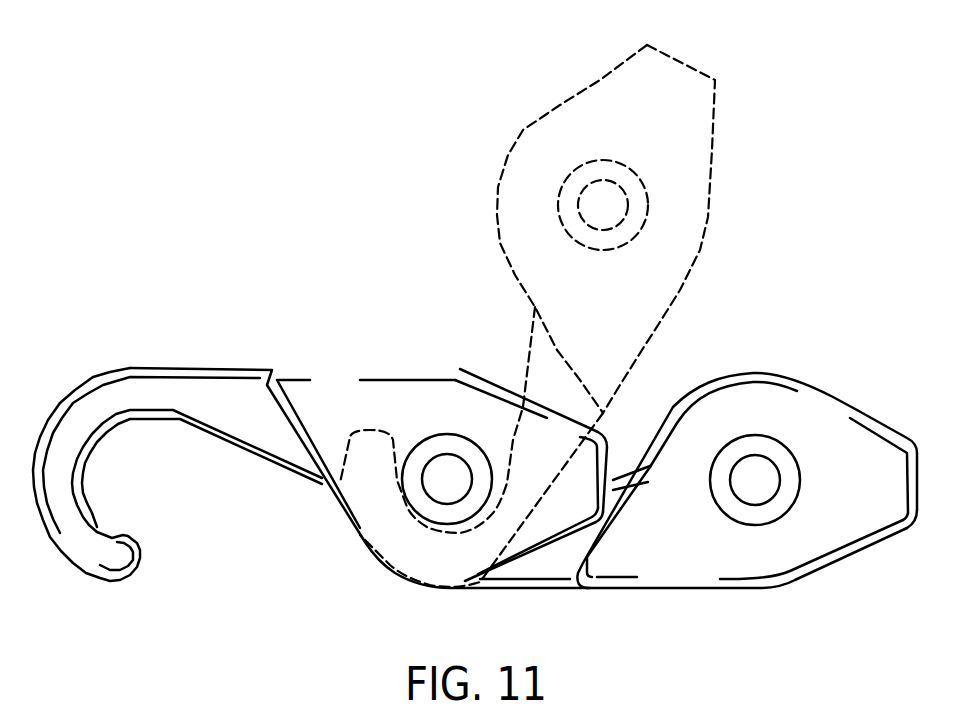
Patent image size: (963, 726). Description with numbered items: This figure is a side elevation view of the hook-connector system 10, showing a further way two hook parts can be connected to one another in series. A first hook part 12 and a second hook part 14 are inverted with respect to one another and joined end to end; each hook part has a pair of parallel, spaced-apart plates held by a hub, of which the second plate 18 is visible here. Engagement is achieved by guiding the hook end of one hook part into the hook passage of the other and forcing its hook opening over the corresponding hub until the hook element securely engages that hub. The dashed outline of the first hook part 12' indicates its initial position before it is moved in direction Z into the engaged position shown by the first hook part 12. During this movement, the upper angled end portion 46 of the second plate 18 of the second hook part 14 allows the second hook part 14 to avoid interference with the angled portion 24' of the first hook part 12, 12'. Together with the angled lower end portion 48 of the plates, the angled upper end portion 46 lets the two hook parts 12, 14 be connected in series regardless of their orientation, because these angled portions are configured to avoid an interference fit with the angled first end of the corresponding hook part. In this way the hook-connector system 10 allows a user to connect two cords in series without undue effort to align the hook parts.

The hook-connector system 10 is at (243, 302).
The first hook part 12 is at (742, 457).
The first hook part in initial position 12' is at (567, 316).
The second hook part 14 is at (450, 368).
The second plate 18 is at (358, 497).
The angled first end 24' is at (437, 387).
The upper angled end portion 46 is at (547, 410).
The angled lower end portion 48 is at (528, 560).
The direction Z is at (760, 240).